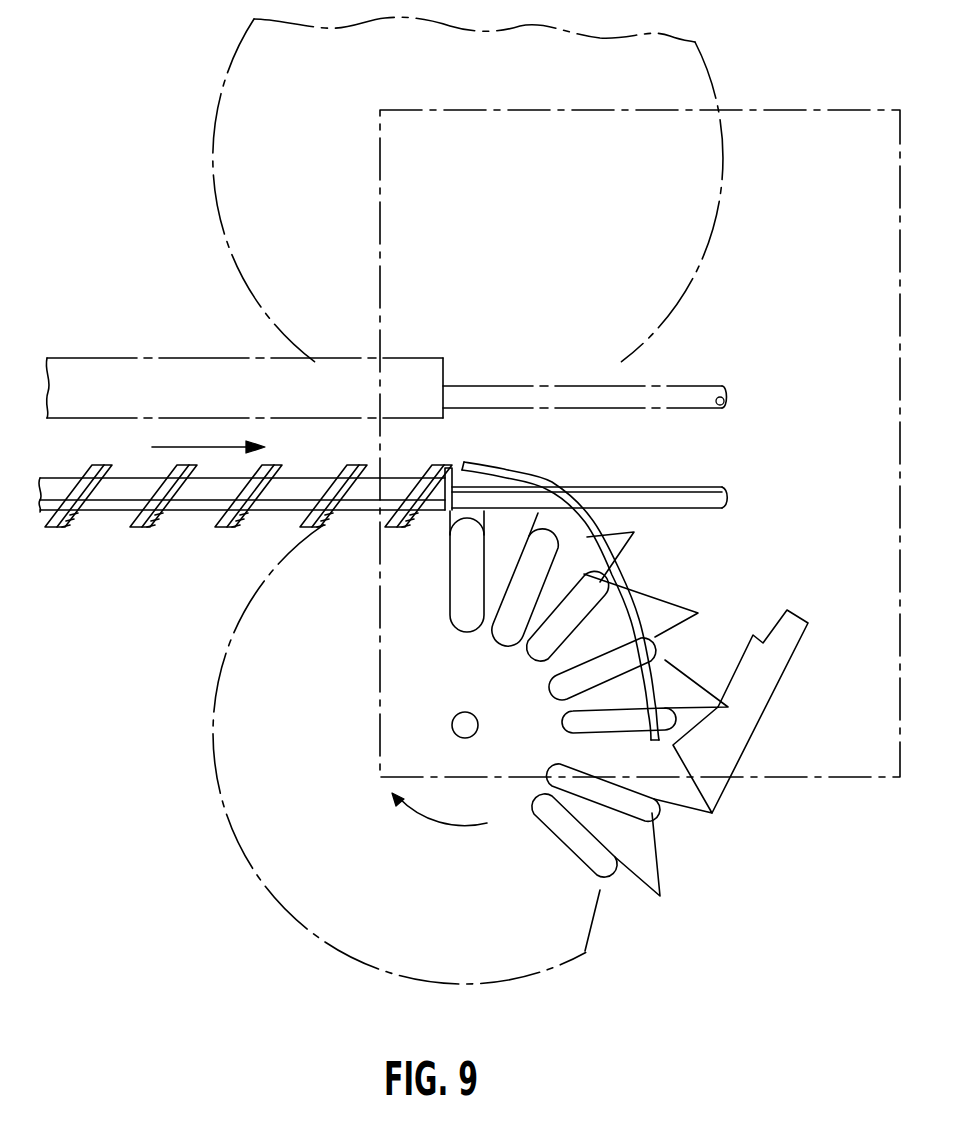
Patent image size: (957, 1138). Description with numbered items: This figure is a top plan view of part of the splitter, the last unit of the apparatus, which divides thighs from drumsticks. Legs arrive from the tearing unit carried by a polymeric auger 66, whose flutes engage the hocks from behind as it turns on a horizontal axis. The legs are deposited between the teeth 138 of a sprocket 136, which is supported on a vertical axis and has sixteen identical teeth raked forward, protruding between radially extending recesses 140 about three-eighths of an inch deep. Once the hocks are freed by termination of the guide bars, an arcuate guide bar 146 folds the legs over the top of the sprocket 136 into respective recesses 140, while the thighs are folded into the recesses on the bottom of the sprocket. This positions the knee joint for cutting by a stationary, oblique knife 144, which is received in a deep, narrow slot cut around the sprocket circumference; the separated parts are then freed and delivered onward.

The polymeric auger 66 is at (116, 503).
The sprocket 136 is at (512, 982).
The teeth 138 is at (667, 888).
The radially extending recesses 140 is at (563, 828).
The stationary oblique knife 144 is at (747, 716).
The arcuate guide bar 146 is at (624, 578).